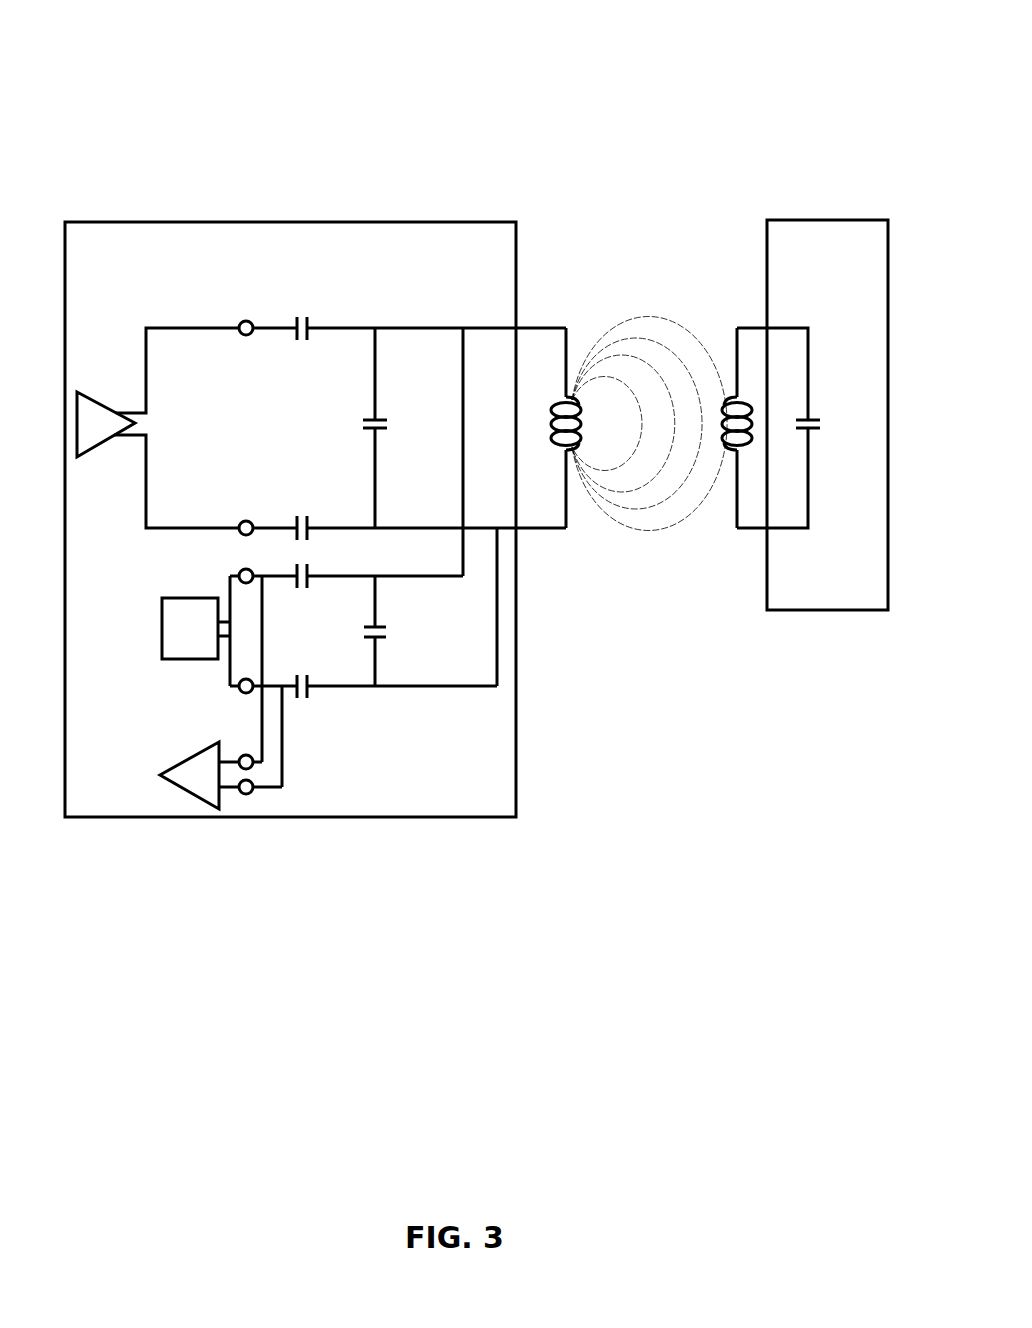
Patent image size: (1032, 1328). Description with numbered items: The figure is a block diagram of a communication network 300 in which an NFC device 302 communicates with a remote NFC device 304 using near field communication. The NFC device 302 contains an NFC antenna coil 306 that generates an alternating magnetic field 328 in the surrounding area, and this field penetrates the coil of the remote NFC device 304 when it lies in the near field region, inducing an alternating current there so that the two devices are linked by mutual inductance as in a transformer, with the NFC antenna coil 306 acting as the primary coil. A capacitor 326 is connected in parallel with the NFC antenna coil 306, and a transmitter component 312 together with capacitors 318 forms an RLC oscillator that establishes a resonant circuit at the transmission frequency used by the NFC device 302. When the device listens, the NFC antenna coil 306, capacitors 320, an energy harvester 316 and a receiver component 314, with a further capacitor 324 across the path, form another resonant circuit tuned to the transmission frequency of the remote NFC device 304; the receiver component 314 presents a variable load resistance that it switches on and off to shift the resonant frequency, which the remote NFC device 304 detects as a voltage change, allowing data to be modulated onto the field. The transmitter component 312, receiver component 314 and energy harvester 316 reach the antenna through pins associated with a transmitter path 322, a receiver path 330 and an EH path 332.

The communication network 300 is at (750, 54).
The NFC device 302 is at (303, 222).
The remote NFC device 304 is at (823, 220).
The NFC antenna coil 306 is at (567, 452).
The transmitter component 312 is at (95, 400).
The receiver component 314 is at (200, 753).
The energy harvester 316 is at (162, 625).
The capacitors 318 is at (307, 340).
The capacitors 320 is at (307, 588).
The transmitter path 322 is at (240, 322).
The capacitor 324 is at (378, 637).
The capacitor 326 is at (375, 420).
The magnetic field 328 is at (648, 317).
The receiver path 330 is at (249, 755).
The EH path 332 is at (241, 571).